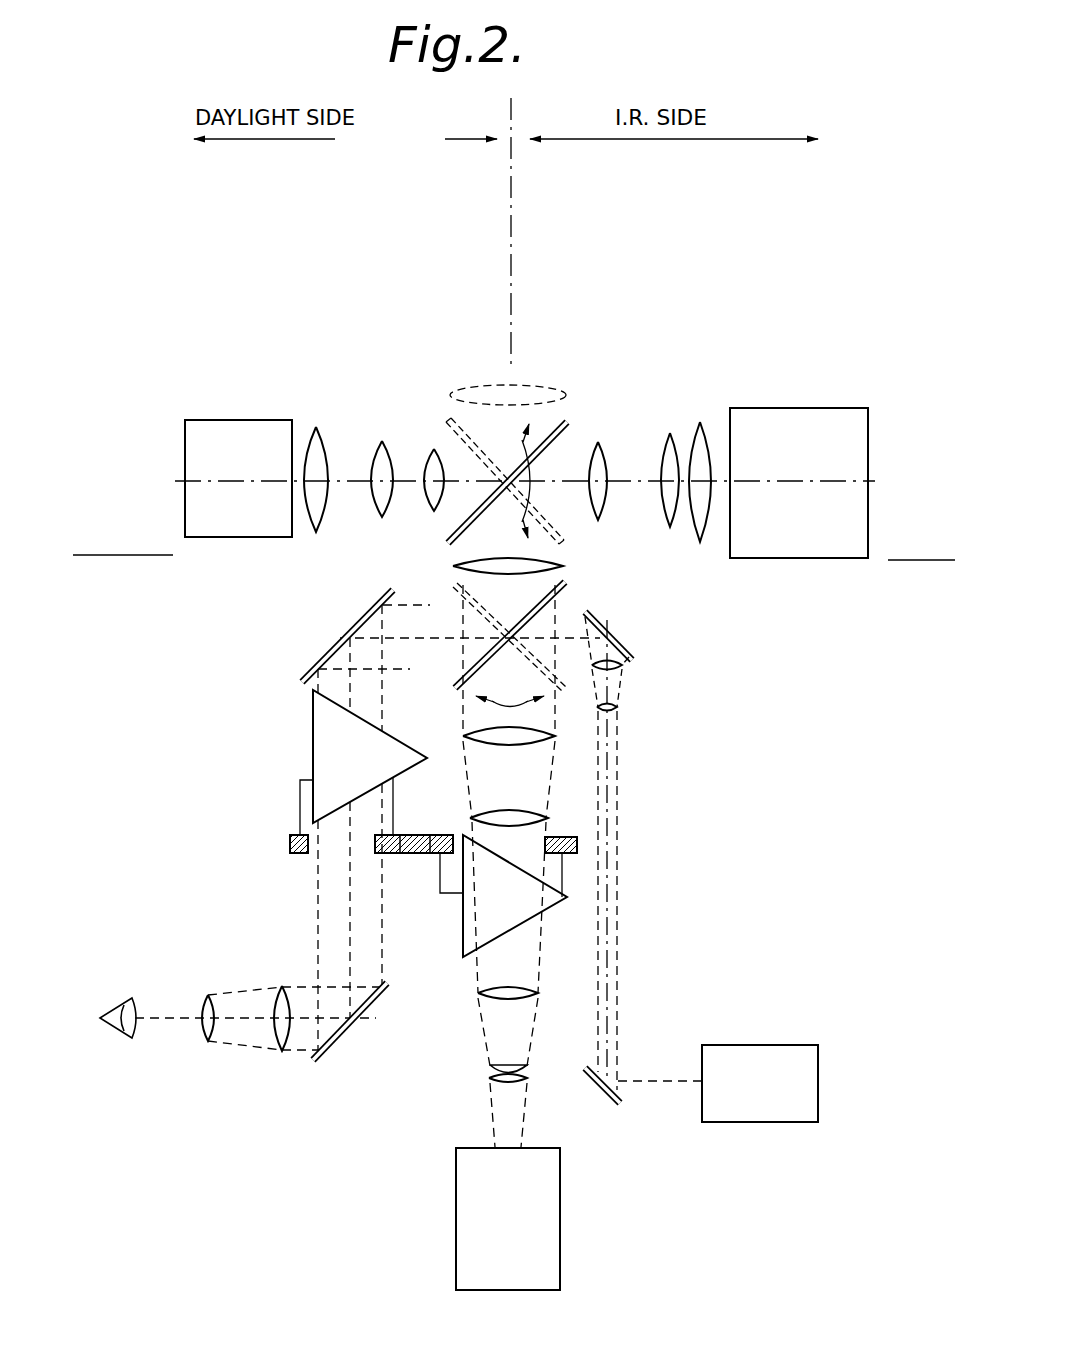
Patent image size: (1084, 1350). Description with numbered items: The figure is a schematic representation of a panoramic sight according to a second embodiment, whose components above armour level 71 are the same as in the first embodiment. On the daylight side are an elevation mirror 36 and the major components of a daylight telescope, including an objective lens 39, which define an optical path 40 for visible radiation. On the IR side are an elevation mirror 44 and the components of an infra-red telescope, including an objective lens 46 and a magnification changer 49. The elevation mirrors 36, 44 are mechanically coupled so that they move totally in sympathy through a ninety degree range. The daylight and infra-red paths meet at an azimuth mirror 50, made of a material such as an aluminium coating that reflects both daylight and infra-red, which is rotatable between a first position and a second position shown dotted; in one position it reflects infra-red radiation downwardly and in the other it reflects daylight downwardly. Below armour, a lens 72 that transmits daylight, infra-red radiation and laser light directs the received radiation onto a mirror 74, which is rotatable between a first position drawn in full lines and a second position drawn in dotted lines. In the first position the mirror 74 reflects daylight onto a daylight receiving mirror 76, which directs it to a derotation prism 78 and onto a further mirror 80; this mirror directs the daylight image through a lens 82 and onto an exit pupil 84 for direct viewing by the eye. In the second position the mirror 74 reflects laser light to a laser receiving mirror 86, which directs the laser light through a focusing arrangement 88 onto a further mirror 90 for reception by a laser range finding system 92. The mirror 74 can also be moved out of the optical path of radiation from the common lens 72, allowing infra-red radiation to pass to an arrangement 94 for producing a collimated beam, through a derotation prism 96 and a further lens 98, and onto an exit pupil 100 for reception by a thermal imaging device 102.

The elevation mirror 36 is at (270, 560).
The objective lens 39 is at (316, 428).
The optical path 40 is at (432, 437).
The elevation mirror 44 is at (828, 565).
The objective lens 46 is at (700, 424).
The magnification changer 49 is at (670, 421).
The azimuth mirror 50 is at (563, 418).
The armour level 71 is at (135, 555).
The lens 72 is at (565, 568).
The mirror 74 is at (566, 590).
The daylight receiving mirror 76 is at (318, 660).
The derotation prism 78 is at (366, 768).
The further mirror 80 is at (340, 1040).
The lens 82 is at (278, 1042).
The exit pupil 84 is at (200, 1040).
The laser receiving mirror 86 is at (620, 650).
The focusing arrangement 88 is at (636, 664).
The further mirror 90 is at (606, 1086).
The laser range finding system 92 is at (772, 1099).
The arrangement for producing a collimated beam 94 is at (563, 725).
The derotation prism 96 is at (516, 906).
The further lens 98 is at (505, 997).
The exit pupil 100 is at (521, 1093).
The thermal imaging device 102 is at (418, 1178).